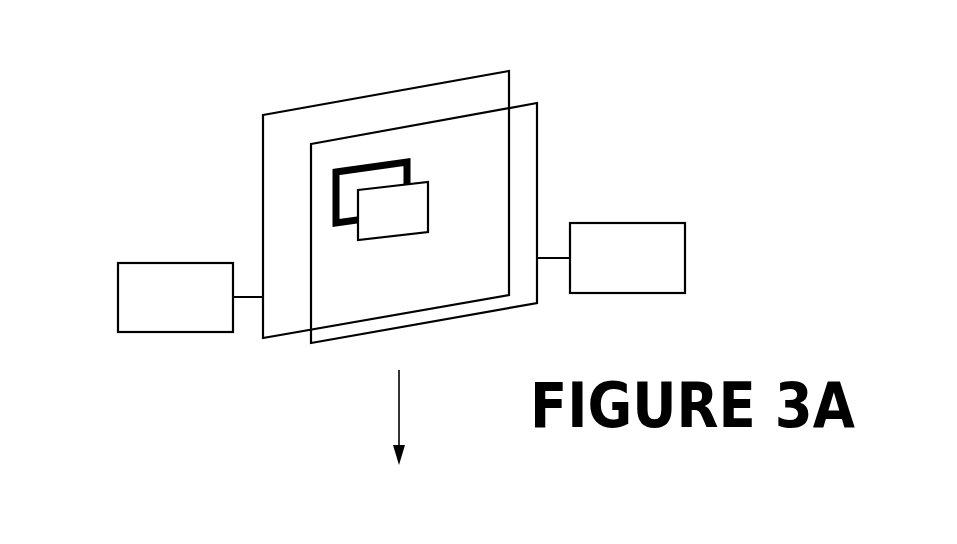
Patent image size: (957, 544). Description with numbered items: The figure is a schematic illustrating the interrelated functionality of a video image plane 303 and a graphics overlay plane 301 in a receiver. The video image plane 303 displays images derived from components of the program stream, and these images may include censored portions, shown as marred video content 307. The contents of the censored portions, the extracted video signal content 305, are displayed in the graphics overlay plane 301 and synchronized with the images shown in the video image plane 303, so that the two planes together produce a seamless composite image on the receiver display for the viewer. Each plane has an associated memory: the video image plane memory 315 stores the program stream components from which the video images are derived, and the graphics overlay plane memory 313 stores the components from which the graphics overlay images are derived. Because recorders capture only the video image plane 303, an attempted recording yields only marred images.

The graphics overlay plane 301 is at (299, 221).
The video image plane 303 is at (252, 146).
The extracted video signal content 305 is at (415, 222).
The marred video content 307 is at (424, 166).
The graphics overlay plane memory 313 is at (605, 269).
The video image plane memory 315 is at (153, 308).